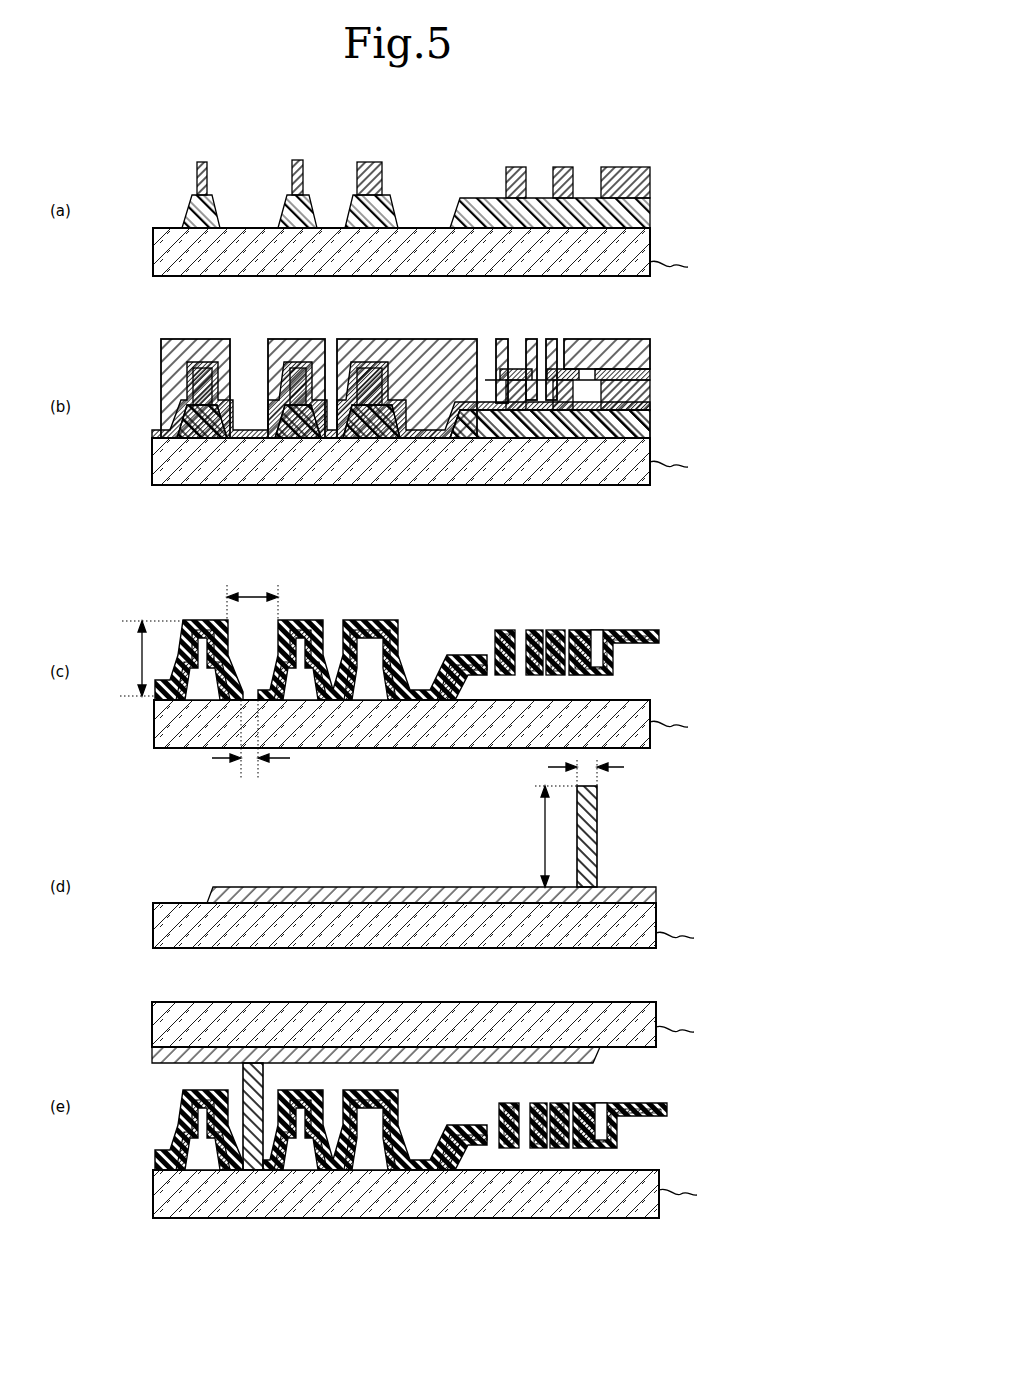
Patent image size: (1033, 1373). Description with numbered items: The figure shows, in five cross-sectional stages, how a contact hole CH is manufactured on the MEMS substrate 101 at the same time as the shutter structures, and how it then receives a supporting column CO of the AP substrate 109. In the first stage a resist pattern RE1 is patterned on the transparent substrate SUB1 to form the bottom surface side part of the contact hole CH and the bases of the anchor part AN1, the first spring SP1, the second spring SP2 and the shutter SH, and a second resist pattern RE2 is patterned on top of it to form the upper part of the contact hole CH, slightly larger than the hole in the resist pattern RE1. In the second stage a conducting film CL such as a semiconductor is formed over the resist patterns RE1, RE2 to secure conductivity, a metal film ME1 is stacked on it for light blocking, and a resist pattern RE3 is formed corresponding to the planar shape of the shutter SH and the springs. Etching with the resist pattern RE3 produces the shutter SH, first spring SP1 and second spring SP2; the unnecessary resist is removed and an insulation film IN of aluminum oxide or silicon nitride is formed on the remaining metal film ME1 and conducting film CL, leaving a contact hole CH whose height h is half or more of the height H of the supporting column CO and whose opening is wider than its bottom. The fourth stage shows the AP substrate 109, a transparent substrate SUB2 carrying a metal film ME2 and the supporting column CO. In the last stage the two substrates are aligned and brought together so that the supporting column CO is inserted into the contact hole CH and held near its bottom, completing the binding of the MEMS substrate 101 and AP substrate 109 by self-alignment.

The transparent substrate SUB1 is at (405, 723).
The transparent substrate SUB2 is at (404, 975).
The MEMS substrate 101 is at (689, 731).
The AP substrate 109 is at (690, 985).
The resist pattern RE1 is at (186, 210).
The resist pattern RE2 is at (196, 170).
The resist pattern RE3 is at (632, 339).
The metal film ME1 is at (650, 372).
The metal film ME2 is at (400, 887).
The conducting film CL is at (650, 385).
The contact hole CH is at (285, 180).
The anchor part AN1 is at (332, 615).
The first spring SP1 is at (541, 628).
The second spring SP2 is at (503, 628).
The shutter SH is at (632, 630).
The insulation film IN is at (655, 645).
The supporting column CO is at (598, 858).
The height of contact hole h is at (151, 658).
The height of supporting column H is at (552, 836).